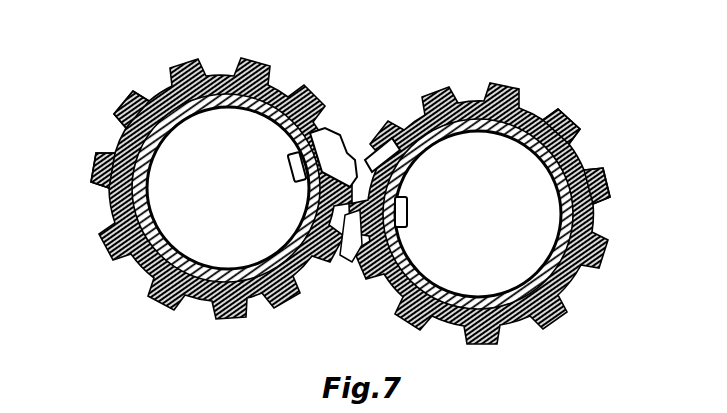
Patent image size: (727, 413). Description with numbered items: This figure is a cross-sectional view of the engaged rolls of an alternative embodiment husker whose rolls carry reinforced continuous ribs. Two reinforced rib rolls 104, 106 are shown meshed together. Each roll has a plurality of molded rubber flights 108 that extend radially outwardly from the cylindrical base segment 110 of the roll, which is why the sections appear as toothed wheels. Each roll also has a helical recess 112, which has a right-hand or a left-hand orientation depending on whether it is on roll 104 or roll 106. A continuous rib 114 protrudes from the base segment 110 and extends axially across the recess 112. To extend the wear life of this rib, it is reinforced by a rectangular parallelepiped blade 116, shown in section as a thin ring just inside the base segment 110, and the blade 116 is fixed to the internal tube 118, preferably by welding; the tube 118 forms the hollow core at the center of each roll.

The reinforced rib roll 104 is at (228, 58).
The reinforced rib roll 106 is at (466, 86).
The molded rubber flights 108 is at (97, 178).
The cylindrical base segment 110 is at (117, 128).
The helical recess 112 is at (333, 128).
The continuous rib 114 is at (352, 262).
The rectangular parallelepiped blade 116 is at (308, 212).
The internal tube 118 is at (148, 192).